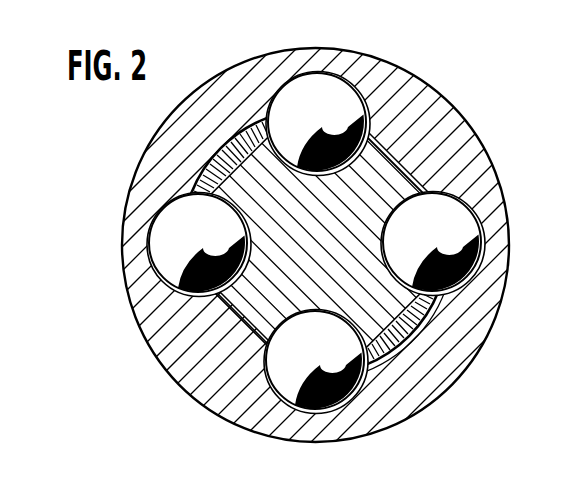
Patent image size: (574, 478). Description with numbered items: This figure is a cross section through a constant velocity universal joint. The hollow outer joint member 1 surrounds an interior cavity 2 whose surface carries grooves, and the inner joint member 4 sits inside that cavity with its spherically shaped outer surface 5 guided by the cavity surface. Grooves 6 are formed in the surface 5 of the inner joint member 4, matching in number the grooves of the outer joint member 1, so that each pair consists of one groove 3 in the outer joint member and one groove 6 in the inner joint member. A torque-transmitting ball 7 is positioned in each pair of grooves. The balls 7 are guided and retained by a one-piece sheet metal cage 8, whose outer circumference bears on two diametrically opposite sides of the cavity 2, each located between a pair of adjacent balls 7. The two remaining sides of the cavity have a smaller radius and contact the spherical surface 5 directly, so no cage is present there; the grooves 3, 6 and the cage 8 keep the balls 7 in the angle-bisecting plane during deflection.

The outer joint member 1 is at (408, 83).
The interior cavity 2 is at (424, 302).
The groove 3 is at (478, 219).
The inner joint member 4 is at (414, 188).
The spherically shaped outer surface 5 is at (390, 193).
The groove 6 is at (436, 304).
The torque-transmitting ball 7 is at (454, 217).
The cage 8 is at (410, 342).